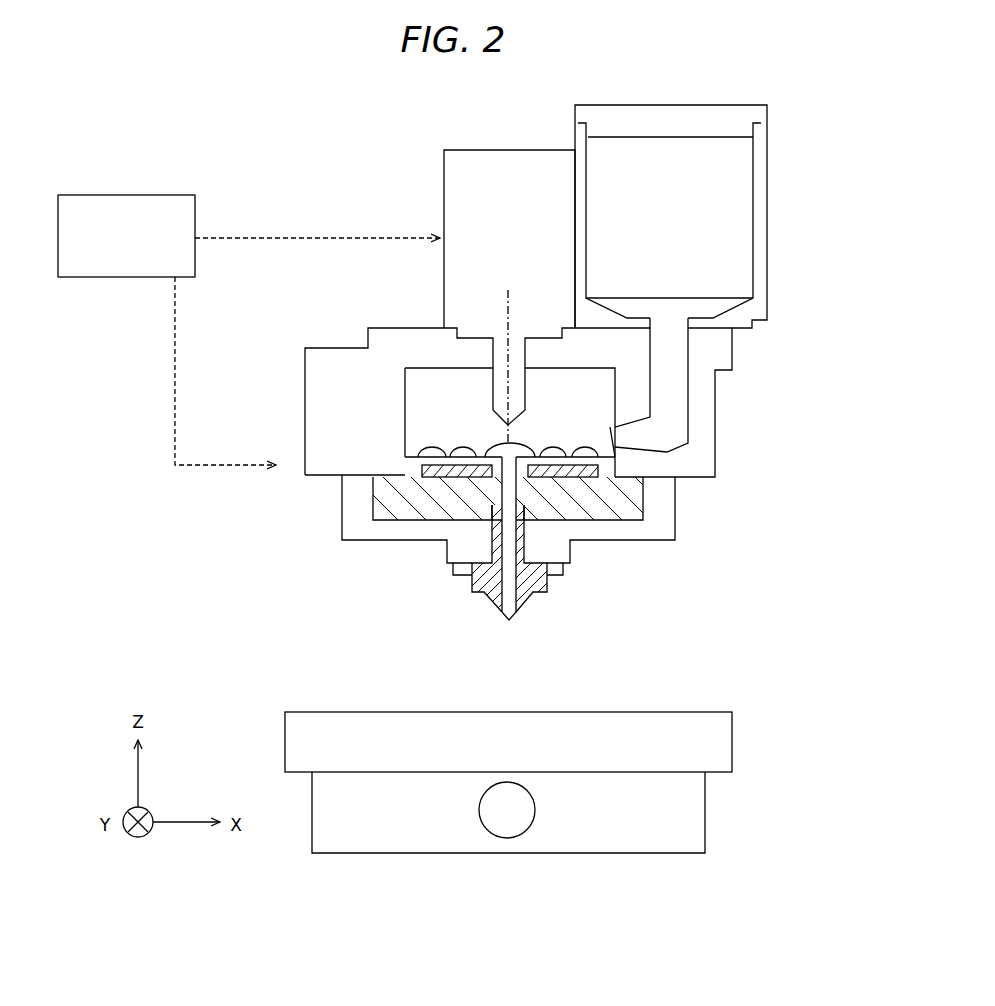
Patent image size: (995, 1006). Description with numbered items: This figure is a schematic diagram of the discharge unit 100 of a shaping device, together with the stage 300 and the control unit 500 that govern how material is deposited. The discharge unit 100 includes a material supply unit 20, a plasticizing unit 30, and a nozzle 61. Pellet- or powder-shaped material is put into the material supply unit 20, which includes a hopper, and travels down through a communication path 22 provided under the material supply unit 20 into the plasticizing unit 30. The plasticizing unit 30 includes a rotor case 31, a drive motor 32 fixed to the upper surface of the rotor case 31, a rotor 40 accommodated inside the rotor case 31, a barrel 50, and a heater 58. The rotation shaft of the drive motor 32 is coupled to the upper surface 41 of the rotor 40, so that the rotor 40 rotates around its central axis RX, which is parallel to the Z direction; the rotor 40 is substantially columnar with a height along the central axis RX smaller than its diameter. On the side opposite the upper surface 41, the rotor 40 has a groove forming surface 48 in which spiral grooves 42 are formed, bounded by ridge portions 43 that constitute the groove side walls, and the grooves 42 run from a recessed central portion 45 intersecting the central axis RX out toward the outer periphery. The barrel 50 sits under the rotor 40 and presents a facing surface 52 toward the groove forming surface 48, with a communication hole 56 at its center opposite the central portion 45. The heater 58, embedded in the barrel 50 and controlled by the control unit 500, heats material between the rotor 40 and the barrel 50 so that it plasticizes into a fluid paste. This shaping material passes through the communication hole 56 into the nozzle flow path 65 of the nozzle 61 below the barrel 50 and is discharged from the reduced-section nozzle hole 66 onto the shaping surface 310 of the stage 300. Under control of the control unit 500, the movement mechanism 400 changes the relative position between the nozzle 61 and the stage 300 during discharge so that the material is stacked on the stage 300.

The discharge unit 100 is at (324, 131).
The control unit 500 is at (122, 195).
The plasticizing unit 30 is at (360, 217).
The drive motor 32 is at (444, 178).
The central axis RX is at (508, 300).
The rotor case 31 is at (410, 324).
The upper surface 41 is at (368, 345).
The rotor 40 is at (425, 392).
The grooves 42 is at (495, 452).
The central portion 45 is at (452, 450).
The facing surface 52 is at (425, 465).
The ridge portions 43 is at (365, 492).
The barrel 50 is at (375, 502).
The communication hole 56 is at (510, 490).
The heater 58 is at (540, 488).
The nozzle 61 is at (523, 606).
The nozzle flow path 65 is at (512, 565).
The nozzle hole 66 is at (512, 621).
The material supply unit 20 is at (767, 213).
The communication path 22 is at (668, 388).
The groove forming surface 48 is at (618, 463).
The stage 300 is at (707, 748).
The shaping surface 310 is at (678, 712).
The movement mechanism 400 is at (750, 813).